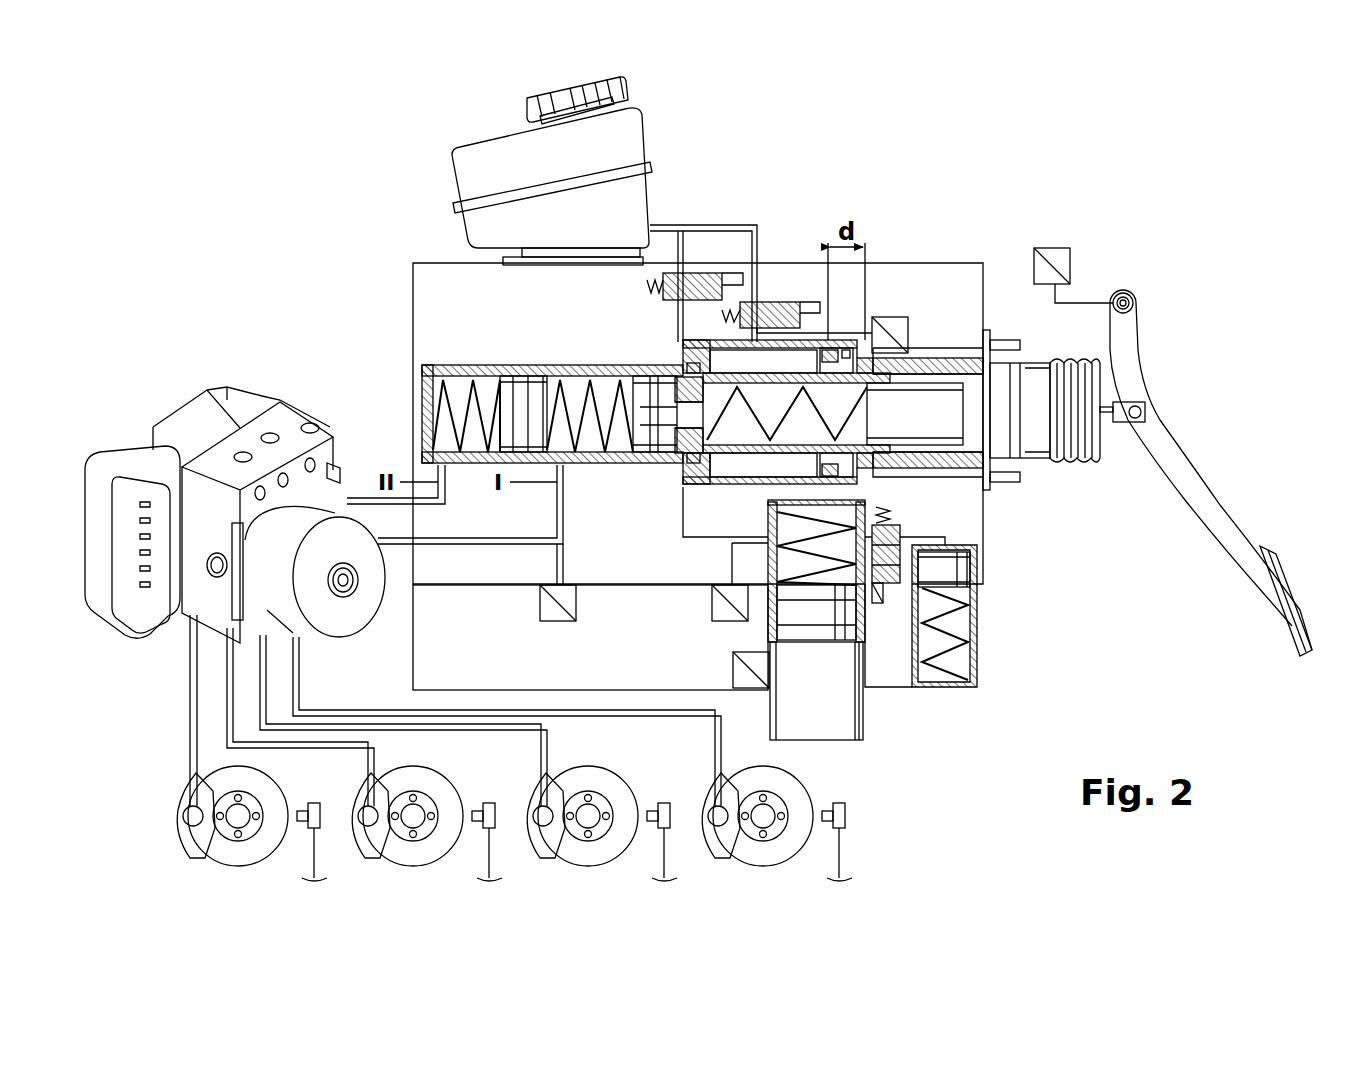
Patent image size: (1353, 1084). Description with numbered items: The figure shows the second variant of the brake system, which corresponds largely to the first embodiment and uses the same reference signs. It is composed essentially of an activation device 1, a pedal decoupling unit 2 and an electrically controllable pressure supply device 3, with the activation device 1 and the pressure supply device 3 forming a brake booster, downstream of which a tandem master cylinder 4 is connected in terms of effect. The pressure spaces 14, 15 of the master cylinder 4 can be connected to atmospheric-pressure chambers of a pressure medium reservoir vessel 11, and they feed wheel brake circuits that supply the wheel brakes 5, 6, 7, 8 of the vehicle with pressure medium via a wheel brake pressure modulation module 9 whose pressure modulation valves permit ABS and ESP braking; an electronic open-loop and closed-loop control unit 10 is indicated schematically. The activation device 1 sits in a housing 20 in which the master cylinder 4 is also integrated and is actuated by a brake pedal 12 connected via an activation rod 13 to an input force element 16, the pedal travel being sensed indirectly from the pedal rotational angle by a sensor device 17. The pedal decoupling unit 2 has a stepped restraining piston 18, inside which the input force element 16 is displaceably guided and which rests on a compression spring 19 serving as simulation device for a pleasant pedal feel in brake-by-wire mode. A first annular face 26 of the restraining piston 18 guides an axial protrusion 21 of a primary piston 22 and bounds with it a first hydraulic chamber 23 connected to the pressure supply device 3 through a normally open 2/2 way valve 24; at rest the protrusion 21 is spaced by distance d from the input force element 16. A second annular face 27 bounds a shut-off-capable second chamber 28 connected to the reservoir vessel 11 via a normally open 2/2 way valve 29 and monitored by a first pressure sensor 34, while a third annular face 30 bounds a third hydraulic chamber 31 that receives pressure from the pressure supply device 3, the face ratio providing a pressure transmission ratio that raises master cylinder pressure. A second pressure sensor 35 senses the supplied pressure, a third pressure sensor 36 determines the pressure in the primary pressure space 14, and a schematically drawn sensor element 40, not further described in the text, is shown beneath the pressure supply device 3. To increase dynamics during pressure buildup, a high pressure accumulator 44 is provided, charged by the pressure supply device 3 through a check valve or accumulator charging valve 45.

The activation device 1 is at (1062, 472).
The pedal decoupling unit 2 is at (937, 352).
The electrically controllable pressure supply device 3 is at (856, 762).
The tandem master cylinder 4 is at (427, 404).
The wheel brake 5 is at (198, 853).
The wheel brake 6 is at (373, 853).
The wheel brake 7 is at (548, 853).
The wheel brake 8 is at (723, 853).
The wheel brake pressure modulation module 9 is at (174, 398).
The electronic open-loop and closed-loop control unit 10 is at (445, 668).
The pressure medium reservoir vessel 11 is at (470, 168).
The brake pedal 12 is at (1186, 452).
The activation rod 13 is at (1108, 413).
The primary pressure space 14 is at (580, 377).
The pressure space 15 is at (460, 377).
The input force element 16 is at (932, 432).
The sensor device 17 is at (1053, 248).
The restraining piston 18 is at (964, 345).
The compression spring 19 is at (730, 457).
The housing 20 is at (965, 510).
The axial protrusion 21 is at (820, 417).
The primary piston 22 is at (650, 372).
The first hydraulic chamber 23 is at (693, 358).
The 2/2 way valve 24 is at (700, 273).
The first annular face 26 is at (672, 470).
The second annular face 27 is at (805, 345).
The second hydraulic chamber 28 is at (801, 571).
The 2/2 way valve 29 is at (770, 302).
The third annular face 30 is at (856, 470).
The third hydraulic chamber 31 is at (843, 335).
The first pressure sensor 34 is at (892, 317).
The second pressure sensor 35 is at (733, 622).
The third pressure sensor 36 is at (548, 612).
The travel sensor 40 is at (753, 690).
The high pressure accumulator 44 is at (980, 641).
The accumulator charging valve 45 is at (887, 603).